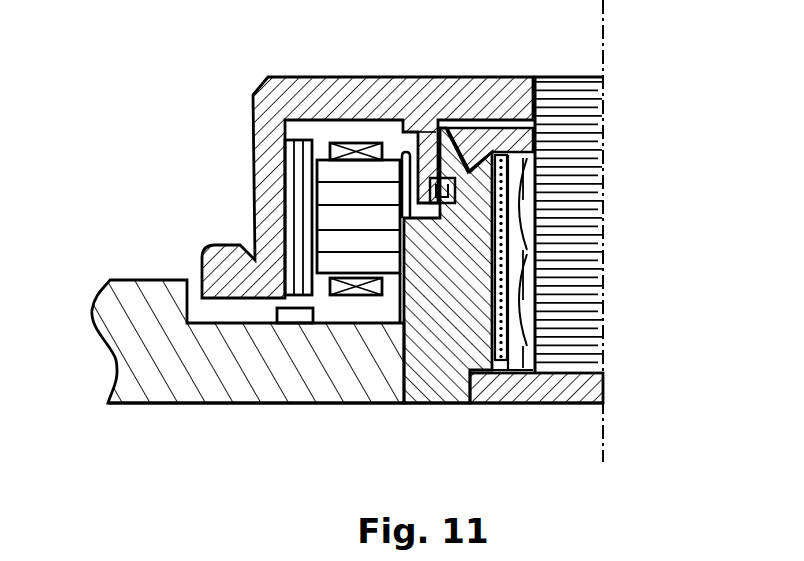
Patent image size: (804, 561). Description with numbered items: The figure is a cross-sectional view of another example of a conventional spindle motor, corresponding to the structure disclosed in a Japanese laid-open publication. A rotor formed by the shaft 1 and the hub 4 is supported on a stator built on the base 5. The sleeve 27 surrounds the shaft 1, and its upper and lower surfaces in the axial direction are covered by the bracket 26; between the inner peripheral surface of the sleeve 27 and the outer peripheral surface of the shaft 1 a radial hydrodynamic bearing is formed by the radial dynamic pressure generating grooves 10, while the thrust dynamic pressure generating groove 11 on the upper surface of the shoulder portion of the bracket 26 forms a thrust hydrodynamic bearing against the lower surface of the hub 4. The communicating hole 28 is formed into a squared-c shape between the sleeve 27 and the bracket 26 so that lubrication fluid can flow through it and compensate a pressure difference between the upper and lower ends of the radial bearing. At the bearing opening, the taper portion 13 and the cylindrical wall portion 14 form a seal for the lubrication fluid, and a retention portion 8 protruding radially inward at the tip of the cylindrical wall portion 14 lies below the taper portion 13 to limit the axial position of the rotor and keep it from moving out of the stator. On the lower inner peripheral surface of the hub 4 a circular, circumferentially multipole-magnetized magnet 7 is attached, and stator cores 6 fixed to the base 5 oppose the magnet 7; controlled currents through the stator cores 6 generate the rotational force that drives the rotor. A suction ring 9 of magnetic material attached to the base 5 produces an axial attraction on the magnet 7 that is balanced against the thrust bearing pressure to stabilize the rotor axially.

The shaft 1 is at (578, 148).
The hub 4 is at (268, 157).
The base 5 is at (125, 370).
The stator core 6 is at (368, 172).
The magnet 7 is at (295, 215).
The retention portion 8 is at (443, 208).
The suction ring 9 is at (290, 323).
The radial dynamic pressure generating groove 10 is at (538, 200).
The thrust dynamic pressure generating groove 11 is at (440, 130).
The taper portion 13 is at (525, 122).
The cylindrical wall portion 14 is at (398, 138).
The bracket 26 is at (487, 240).
The sleeve 27 is at (538, 173).
The communicating hole 28 is at (472, 375).